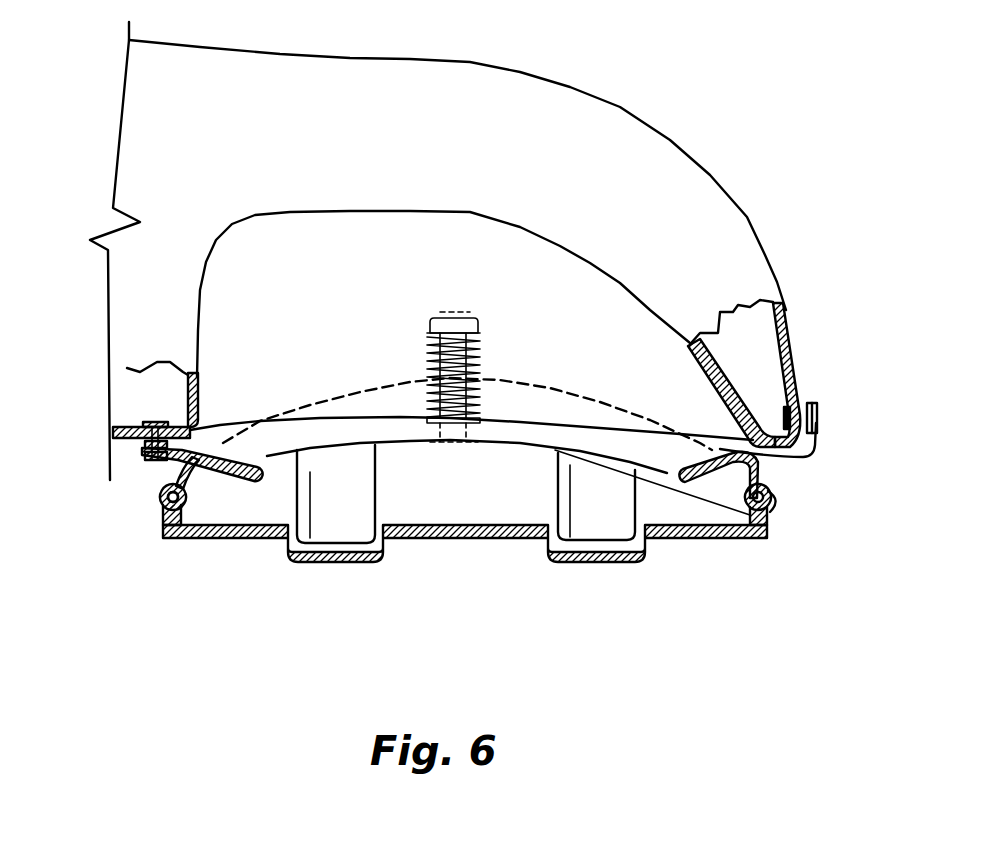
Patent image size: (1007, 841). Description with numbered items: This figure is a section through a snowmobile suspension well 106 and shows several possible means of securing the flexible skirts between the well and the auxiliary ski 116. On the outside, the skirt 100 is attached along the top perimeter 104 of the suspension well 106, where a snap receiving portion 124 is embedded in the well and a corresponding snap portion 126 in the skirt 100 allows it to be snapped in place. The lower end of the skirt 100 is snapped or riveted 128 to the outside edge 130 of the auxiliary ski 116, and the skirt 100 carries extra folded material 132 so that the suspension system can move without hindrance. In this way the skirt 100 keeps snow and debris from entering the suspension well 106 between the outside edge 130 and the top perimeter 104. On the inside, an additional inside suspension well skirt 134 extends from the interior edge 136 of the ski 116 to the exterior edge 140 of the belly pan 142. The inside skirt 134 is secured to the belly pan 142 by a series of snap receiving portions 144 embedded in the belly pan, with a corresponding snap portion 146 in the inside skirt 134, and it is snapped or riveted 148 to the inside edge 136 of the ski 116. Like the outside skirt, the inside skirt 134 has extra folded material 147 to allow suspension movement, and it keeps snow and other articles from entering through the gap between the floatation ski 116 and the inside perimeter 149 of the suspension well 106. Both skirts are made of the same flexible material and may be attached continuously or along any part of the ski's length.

The skirt 100 is at (783, 457).
The top perimeter 104 is at (793, 405).
The suspension well 106 is at (563, 287).
The auxiliary ski 116 is at (650, 540).
The snap receiving portion 124 is at (803, 405).
The snap portion 126 is at (818, 407).
The rivet 128 is at (775, 503).
The outside edge 130 is at (760, 537).
The extra folded material 132 is at (667, 476).
The inside suspension well skirt 134 is at (160, 491).
The interior edge 136 is at (182, 488).
The exterior edge 140 is at (190, 427).
The belly pan 142 is at (145, 443).
The snap receiving portions 144 is at (143, 424).
The snap portion 146 is at (145, 458).
The extra folded material 147 is at (248, 482).
The rivet 148 is at (145, 512).
The inside perimeter 149 is at (197, 375).